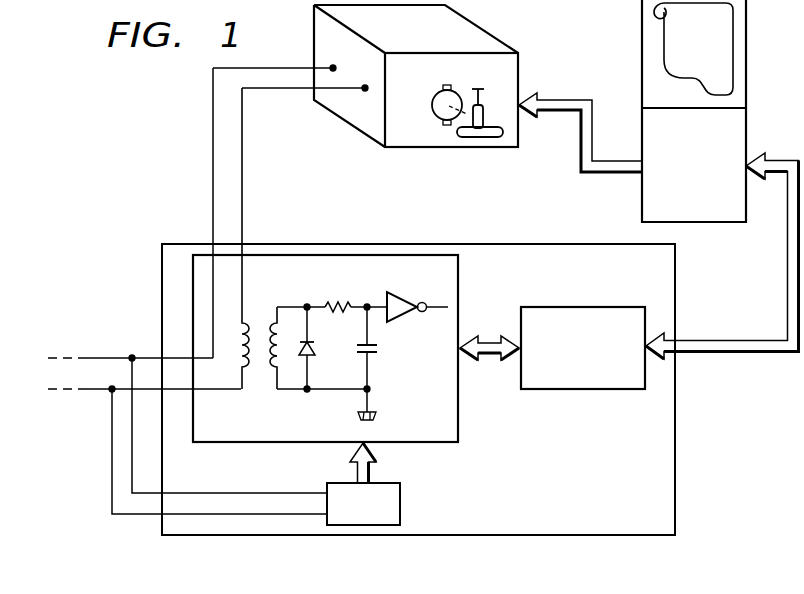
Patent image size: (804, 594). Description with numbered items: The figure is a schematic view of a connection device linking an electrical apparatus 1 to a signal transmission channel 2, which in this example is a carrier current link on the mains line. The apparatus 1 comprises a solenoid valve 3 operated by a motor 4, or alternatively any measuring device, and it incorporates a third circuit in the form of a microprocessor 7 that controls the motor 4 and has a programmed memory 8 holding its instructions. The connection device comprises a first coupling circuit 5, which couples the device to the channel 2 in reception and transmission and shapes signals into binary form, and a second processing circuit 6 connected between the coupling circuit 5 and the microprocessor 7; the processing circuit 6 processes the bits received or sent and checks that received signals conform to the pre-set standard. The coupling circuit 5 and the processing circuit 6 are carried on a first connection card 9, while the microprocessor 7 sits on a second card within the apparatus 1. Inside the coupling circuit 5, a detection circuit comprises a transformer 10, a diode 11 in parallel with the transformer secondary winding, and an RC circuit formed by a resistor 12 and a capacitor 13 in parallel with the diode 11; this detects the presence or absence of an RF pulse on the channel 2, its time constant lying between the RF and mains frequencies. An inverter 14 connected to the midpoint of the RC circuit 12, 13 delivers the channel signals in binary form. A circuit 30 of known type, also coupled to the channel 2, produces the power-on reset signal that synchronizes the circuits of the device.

The electrical apparatus 1 is at (519, 66).
The signal transmission channel 2 is at (98, 357).
The solenoid valve 3 is at (485, 112).
The motor 4 is at (431, 102).
The first coupling circuit 5 is at (461, 409).
The second processing circuit 6 is at (583, 392).
The microprocessor 7 is at (640, 190).
The programmed memory 8 is at (708, 54).
The first card 9 is at (633, 515).
The transformer 10 is at (256, 327).
The diode 11 is at (317, 348).
The resistor of RC circuit 12 is at (338, 300).
The capacitor of RC circuit 13 is at (377, 357).
The inverter 14 is at (413, 322).
The POR circuit 30 is at (376, 516).